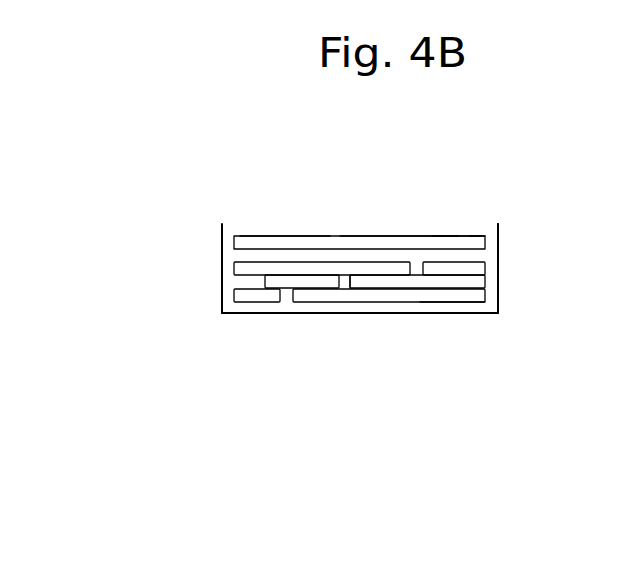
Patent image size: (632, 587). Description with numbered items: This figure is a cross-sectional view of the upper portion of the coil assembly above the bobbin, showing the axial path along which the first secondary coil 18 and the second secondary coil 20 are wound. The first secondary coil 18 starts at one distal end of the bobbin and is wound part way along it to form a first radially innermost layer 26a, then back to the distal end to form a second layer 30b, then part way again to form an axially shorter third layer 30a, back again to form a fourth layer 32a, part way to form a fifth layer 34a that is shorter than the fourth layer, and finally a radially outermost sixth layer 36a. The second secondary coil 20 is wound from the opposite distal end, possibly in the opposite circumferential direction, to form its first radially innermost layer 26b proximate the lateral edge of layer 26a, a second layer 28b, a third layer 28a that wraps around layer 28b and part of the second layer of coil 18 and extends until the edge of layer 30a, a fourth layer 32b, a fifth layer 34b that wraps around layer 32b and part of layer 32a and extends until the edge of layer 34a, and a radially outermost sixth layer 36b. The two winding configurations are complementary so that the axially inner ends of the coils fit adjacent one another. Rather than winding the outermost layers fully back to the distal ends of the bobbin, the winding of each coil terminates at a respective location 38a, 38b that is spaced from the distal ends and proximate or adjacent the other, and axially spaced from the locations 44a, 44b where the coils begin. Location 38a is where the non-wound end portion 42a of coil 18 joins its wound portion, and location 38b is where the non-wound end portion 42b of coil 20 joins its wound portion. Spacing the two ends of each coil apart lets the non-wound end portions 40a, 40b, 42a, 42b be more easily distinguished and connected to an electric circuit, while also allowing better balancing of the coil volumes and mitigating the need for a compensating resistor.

The first secondary coil 18 is at (499, 226).
The second secondary coil 20 is at (325, 236).
The first radially innermost layer of the first secondary coil 26a is at (457, 315).
The first radially innermost layer of the second secondary coil 26b is at (245, 314).
The third layer of the second secondary coil 28a is at (477, 313).
The second layer of the second secondary coil 28b is at (224, 313).
The third layer of the first secondary coil 30a is at (401, 300).
The second layer of the first secondary coil 30b is at (250, 294).
The fourth layer of the first secondary coil 32a is at (365, 282).
The fourth layer of the second secondary coil 32b is at (251, 273).
The fifth layer of the first secondary coil 34a is at (450, 268).
The fifth layer of the second secondary coil 34b is at (285, 236).
The sixth layer of the first secondary coil 36a is at (470, 265).
The sixth layer of the second secondary coil 36b is at (368, 236).
The termination location of the first secondary coil winding 38a is at (453, 236).
The termination location of the second secondary coil winding 38b is at (444, 236).
The non-wound end portion of the first secondary coil 40a is at (499, 237).
The non-wound end portion of the second secondary coil 40b is at (222, 226).
The non-wound end portion of the first secondary coil 42a is at (478, 236).
The non-wound end portion of the second secondary coil 42b is at (438, 233).
The beginning location of the first secondary coil winding 44a is at (499, 228).
The beginning location of the second secondary coil winding 44b is at (222, 230).